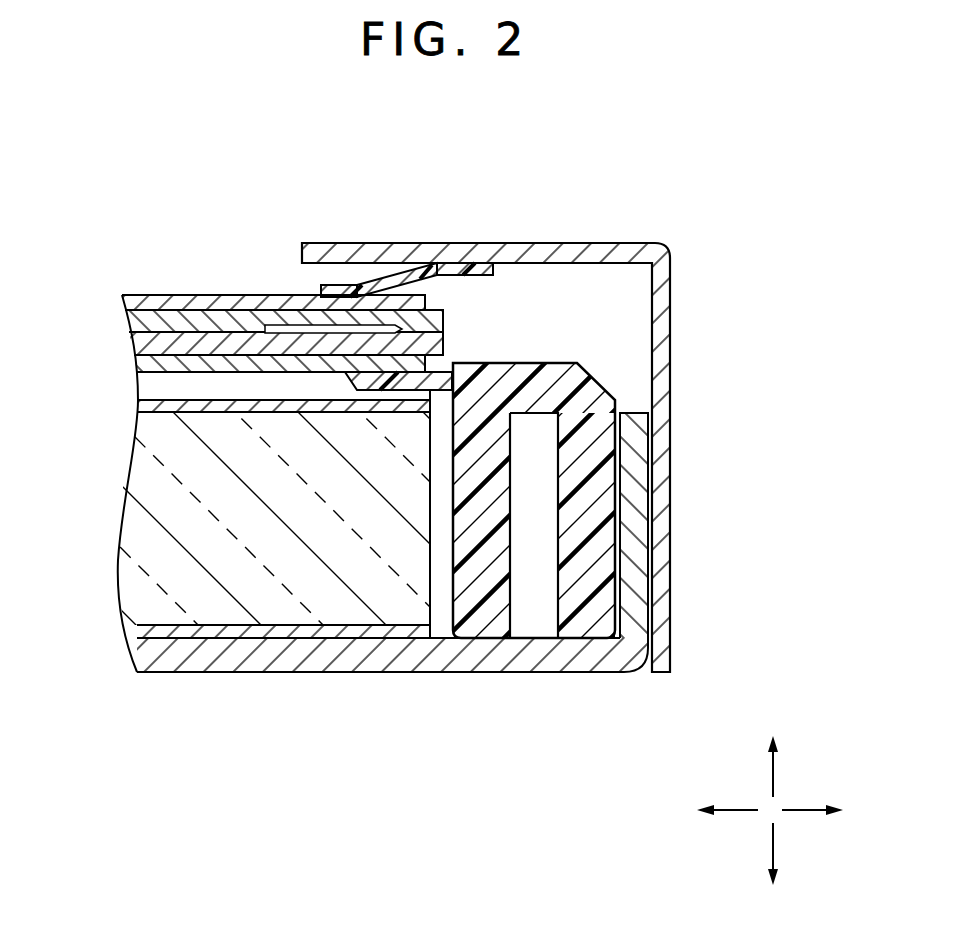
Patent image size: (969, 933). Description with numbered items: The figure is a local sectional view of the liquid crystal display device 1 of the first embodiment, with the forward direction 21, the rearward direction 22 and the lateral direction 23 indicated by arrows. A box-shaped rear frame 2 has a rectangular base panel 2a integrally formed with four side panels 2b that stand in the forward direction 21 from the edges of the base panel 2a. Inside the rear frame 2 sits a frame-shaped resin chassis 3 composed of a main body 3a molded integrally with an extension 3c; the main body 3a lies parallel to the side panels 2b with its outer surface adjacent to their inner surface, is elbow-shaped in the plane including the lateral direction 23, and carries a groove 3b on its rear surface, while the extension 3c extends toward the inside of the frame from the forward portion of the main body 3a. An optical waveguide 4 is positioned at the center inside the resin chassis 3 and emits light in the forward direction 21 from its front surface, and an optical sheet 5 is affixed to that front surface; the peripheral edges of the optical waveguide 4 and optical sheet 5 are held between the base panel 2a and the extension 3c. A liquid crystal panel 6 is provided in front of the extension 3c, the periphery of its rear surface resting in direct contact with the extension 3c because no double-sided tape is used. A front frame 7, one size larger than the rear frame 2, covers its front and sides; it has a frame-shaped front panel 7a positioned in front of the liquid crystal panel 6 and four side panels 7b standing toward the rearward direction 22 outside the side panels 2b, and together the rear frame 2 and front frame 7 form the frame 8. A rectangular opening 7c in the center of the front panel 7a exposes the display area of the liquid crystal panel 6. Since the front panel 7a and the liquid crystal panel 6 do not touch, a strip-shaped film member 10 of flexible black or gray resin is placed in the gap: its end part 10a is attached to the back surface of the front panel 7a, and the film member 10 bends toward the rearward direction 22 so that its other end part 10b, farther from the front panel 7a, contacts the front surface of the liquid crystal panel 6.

The liquid crystal display device 1 is at (724, 222).
The rear frame 2 is at (655, 736).
The base panel 2a is at (468, 673).
The side panels 2b is at (637, 553).
The resin chassis 3 is at (781, 353).
The main body 3a is at (587, 481).
The groove 3b is at (563, 472).
The extension 3c is at (448, 362).
The optical waveguide 4 is at (152, 502).
The optical sheet 5 is at (152, 404).
The liquid crystal panel 6 is at (146, 282).
The front frame 7 is at (583, 168).
The front panel 7a is at (600, 245).
The side panels 7b is at (670, 348).
The opening 7c is at (302, 253).
The frame 8 is at (690, 537).
The film member 10 is at (410, 275).
The end part 10a is at (458, 266).
The other end part 10b is at (343, 290).
The forward direction 21 is at (774, 781).
The rearward direction 22 is at (772, 842).
The lateral direction 23 is at (737, 808).